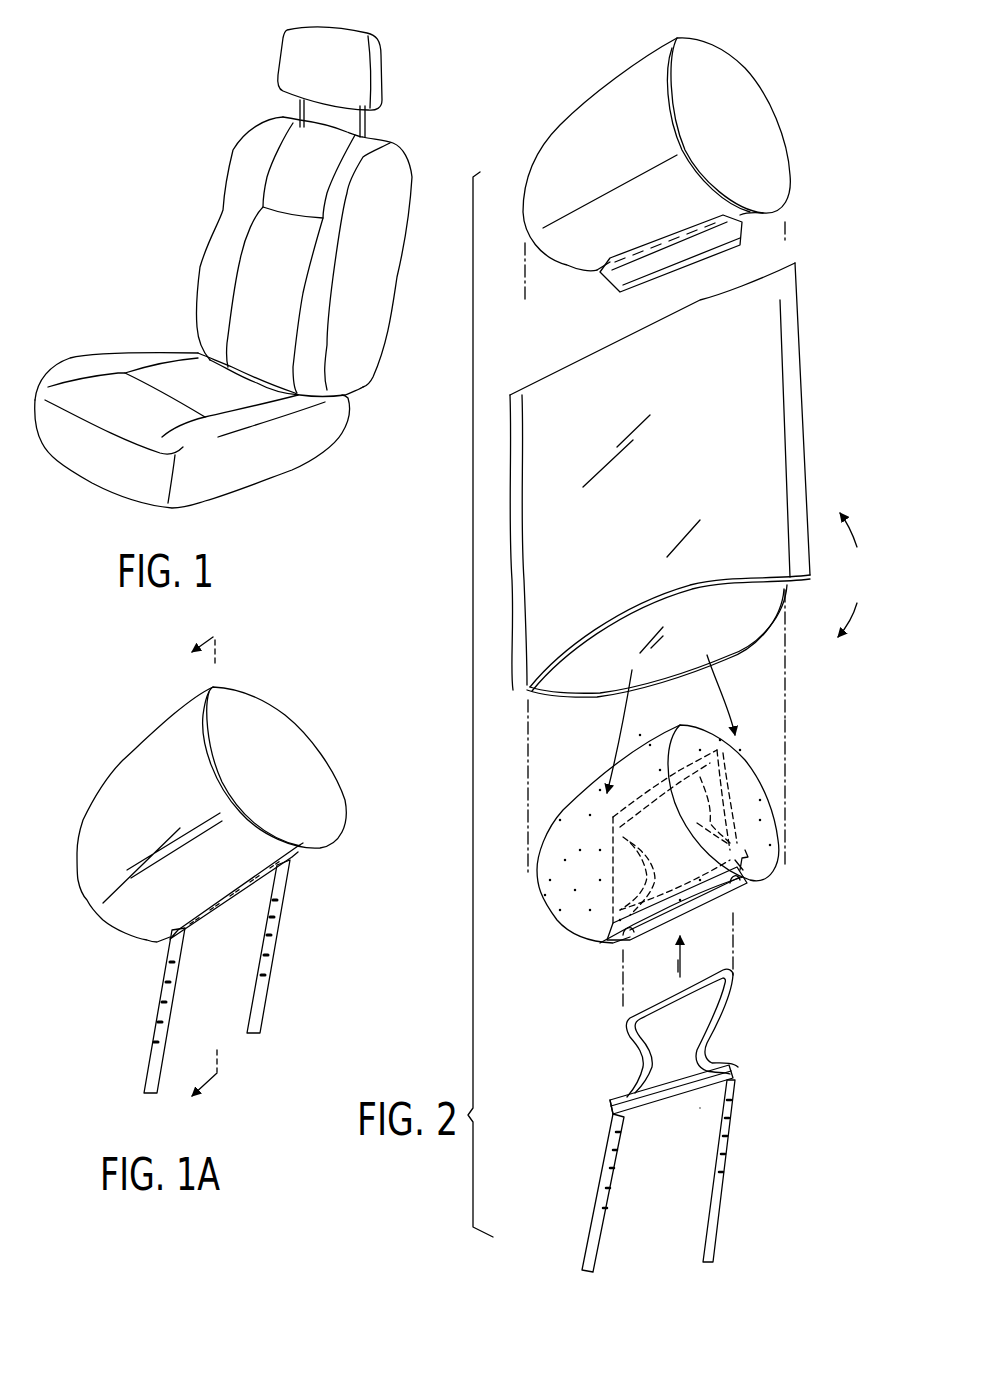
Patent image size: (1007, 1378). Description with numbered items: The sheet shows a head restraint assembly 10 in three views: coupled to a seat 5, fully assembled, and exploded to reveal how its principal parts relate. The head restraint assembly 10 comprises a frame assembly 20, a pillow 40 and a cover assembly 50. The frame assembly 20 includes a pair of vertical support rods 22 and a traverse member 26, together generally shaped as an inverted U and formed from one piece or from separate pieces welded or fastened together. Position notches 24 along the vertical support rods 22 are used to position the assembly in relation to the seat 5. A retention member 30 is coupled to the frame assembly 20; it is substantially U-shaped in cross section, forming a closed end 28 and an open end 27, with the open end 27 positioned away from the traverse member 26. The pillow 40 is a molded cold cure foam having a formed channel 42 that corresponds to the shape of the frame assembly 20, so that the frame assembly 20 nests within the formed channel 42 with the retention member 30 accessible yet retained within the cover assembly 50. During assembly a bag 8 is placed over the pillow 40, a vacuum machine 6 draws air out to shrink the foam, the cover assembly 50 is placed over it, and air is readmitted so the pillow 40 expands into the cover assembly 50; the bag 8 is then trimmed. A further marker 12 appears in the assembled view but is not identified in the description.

In FIG. 1, the seat 5 is at (163, 240).
In FIG. 1, the head restraint assembly 10 is at (247, 50).
In FIG. 1A, the head restraint assembly 10 is at (107, 730).
In FIG. 2, the head restraint assembly 10 is at (854, 575).
In FIG. 1A, the cover assembly 50 is at (317, 753).
In FIG. 2, the cover assembly 50 is at (767, 100).
In FIG. 1A, the pivot axis 12 is at (219, 867).
In FIG. 1A, the vacuum machine 6 is at (203, 887).
In FIG. 1A, the vertical support rods 22 is at (160, 1003).
In FIG. 2, the vertical support rods 22 is at (590, 1242).
In FIG. 1A, the position notches 24 is at (170, 962).
In FIG. 1A, the frame assembly 20 is at (323, 1012).
In FIG. 2, the frame assembly 20 is at (676, 1120).
In FIG. 2, the bag 8 is at (802, 350).
In FIG. 2, the pillow 40 is at (780, 873).
In FIG. 2, the formed channel 42 is at (745, 903).
In FIG. 2, the traverse member 26 is at (650, 1012).
In FIG. 2, the open end 27 is at (700, 1110).
In FIG. 2, the closed end 28 is at (693, 1070).
In FIG. 2, the retention member 30 is at (637, 1116).